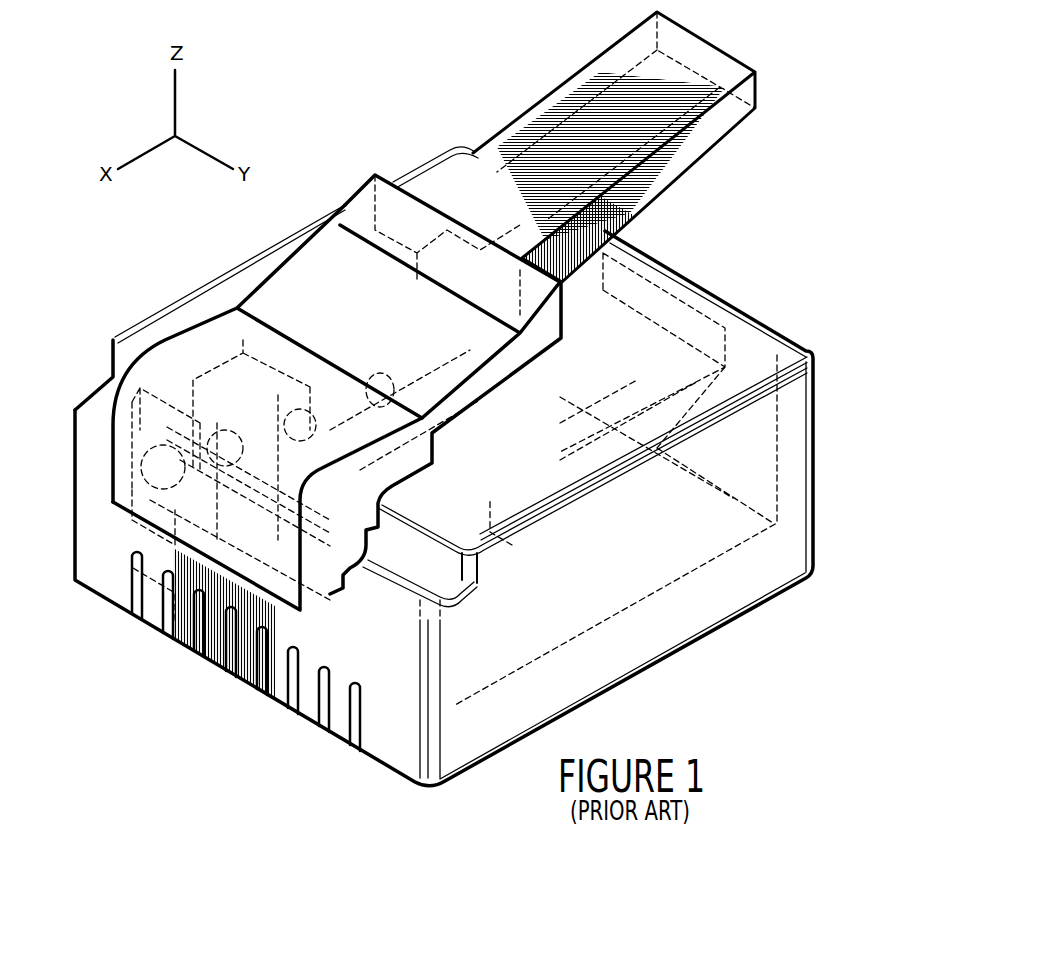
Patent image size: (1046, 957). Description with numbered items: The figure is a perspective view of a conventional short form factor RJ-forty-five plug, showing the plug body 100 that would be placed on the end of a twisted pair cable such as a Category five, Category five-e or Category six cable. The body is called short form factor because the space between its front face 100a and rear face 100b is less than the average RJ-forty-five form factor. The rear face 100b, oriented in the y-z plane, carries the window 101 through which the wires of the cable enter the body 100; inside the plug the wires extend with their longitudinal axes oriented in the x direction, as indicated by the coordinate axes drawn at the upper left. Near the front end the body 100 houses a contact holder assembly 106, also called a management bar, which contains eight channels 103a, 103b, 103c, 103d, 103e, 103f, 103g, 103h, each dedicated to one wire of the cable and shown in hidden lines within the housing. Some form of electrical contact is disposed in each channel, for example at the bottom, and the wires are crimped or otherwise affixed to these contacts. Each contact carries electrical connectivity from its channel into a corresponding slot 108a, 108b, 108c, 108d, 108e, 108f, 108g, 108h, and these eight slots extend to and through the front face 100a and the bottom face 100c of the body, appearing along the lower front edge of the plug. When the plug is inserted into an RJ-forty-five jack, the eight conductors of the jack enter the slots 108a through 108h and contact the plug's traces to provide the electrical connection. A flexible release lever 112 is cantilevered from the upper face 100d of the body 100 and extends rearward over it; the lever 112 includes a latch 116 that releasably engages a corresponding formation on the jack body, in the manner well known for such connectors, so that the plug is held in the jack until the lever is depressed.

The plug body 100 is at (682, 617).
The front face 100a is at (97, 567).
The rear face 100b is at (812, 470).
The bottom face 100c is at (484, 762).
The upper face 100d is at (740, 387).
The window 101 is at (762, 297).
The channel 103a is at (130, 481).
The channel 103b is at (162, 527).
The channel 103c is at (218, 435).
The channel 103d is at (133, 568).
The channel 103e is at (290, 418).
The channel 103f is at (405, 420).
The channel 103g is at (512, 545).
The channel 103h is at (420, 635).
The contact holder assembly 106 is at (490, 578).
The slot 108a is at (130, 614).
The slot 108b is at (161, 634).
The slot 108c is at (192, 652).
The slot 108d is at (224, 672).
The slot 108e is at (255, 690).
The slot 108f is at (286, 710).
The slot 108g is at (317, 728).
The slot 108h is at (348, 748).
The flexible release lever 112 is at (695, 48).
The latch 116 is at (388, 217).